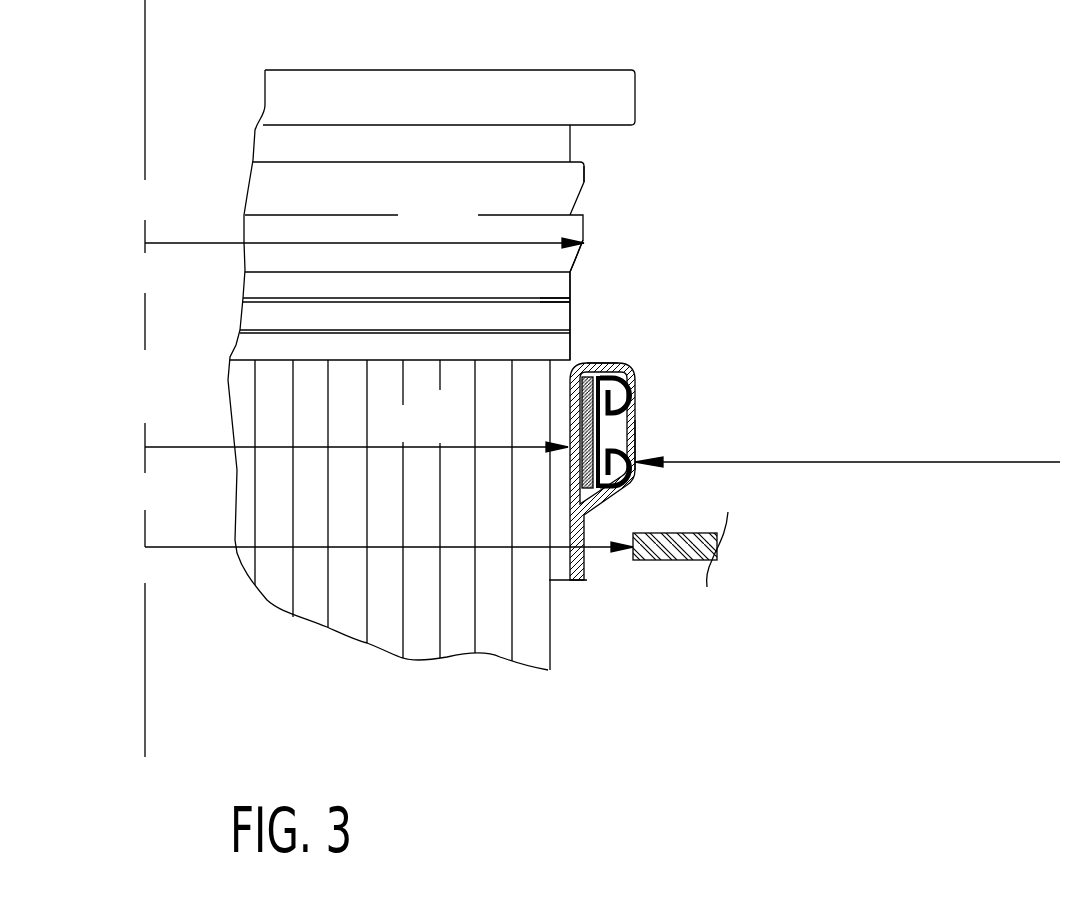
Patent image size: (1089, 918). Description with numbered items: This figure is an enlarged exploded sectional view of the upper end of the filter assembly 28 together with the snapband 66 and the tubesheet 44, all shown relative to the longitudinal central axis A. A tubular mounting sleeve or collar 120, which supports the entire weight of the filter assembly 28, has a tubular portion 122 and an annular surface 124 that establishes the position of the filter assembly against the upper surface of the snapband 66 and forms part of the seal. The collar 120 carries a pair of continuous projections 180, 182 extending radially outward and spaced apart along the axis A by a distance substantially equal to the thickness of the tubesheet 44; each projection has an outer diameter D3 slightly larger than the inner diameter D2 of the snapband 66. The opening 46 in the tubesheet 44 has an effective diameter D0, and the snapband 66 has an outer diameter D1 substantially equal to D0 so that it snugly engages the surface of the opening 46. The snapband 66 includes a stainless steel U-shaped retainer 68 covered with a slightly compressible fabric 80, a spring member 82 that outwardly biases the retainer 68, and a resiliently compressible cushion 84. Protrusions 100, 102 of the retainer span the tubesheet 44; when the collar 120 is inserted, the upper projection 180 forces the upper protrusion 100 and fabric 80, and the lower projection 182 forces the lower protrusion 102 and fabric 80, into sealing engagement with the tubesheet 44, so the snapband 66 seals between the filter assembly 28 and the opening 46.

The annular surface 124 is at (615, 125).
The upper projection 180 is at (587, 173).
The collar 120 is at (593, 188).
The lower projection 182 is at (577, 232).
The tubular portion 122 is at (553, 288).
The filter assembly 28 is at (620, 273).
The cushion 84 is at (590, 360).
The spring member 82 is at (612, 365).
The snapband 66 is at (637, 368).
The upper protrusion 100 is at (633, 392).
The retainer 68 is at (672, 430).
The fabric 80 is at (633, 447).
The lower protrusion 102 is at (628, 493).
The opening 46 is at (633, 537).
The tubesheet 44 is at (680, 563).
The effective diameter of opening D0 is at (212, 548).
The outer diameter of snapband D1 is at (885, 460).
The inner diameter of snapband D2 is at (387, 447).
The outer diameter of projections D3 is at (398, 242).
The longitudinal central axis A is at (145, 722).